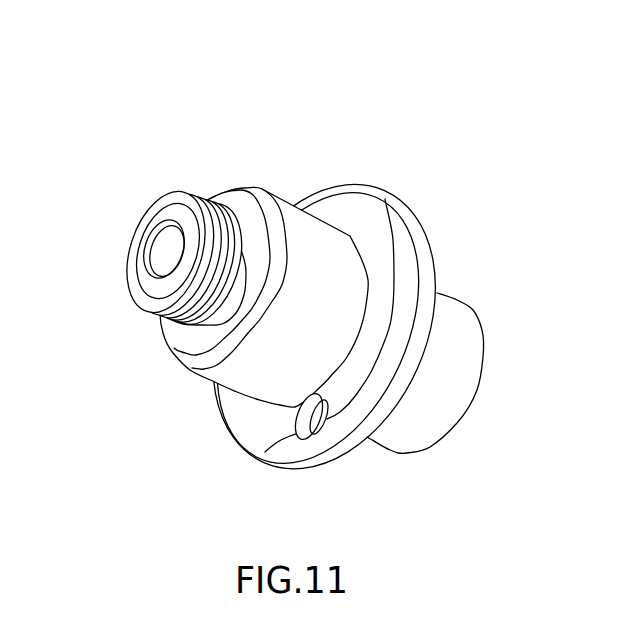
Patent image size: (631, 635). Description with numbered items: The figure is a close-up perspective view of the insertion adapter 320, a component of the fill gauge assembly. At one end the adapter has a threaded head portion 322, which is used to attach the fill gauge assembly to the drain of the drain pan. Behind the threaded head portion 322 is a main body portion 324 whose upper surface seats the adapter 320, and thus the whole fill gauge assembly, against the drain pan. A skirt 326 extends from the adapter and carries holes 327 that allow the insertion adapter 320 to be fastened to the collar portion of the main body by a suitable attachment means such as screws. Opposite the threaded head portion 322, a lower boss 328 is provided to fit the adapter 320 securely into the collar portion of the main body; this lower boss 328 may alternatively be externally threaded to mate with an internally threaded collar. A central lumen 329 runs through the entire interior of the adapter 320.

The insertion adapter 320 is at (321, 295).
The threaded head portion 322 is at (203, 222).
The main body portion 324 is at (203, 330).
The skirt 326 is at (240, 422).
The holes 327 is at (315, 419).
The lower boss 328 is at (452, 350).
The central lumen 329 is at (140, 243).